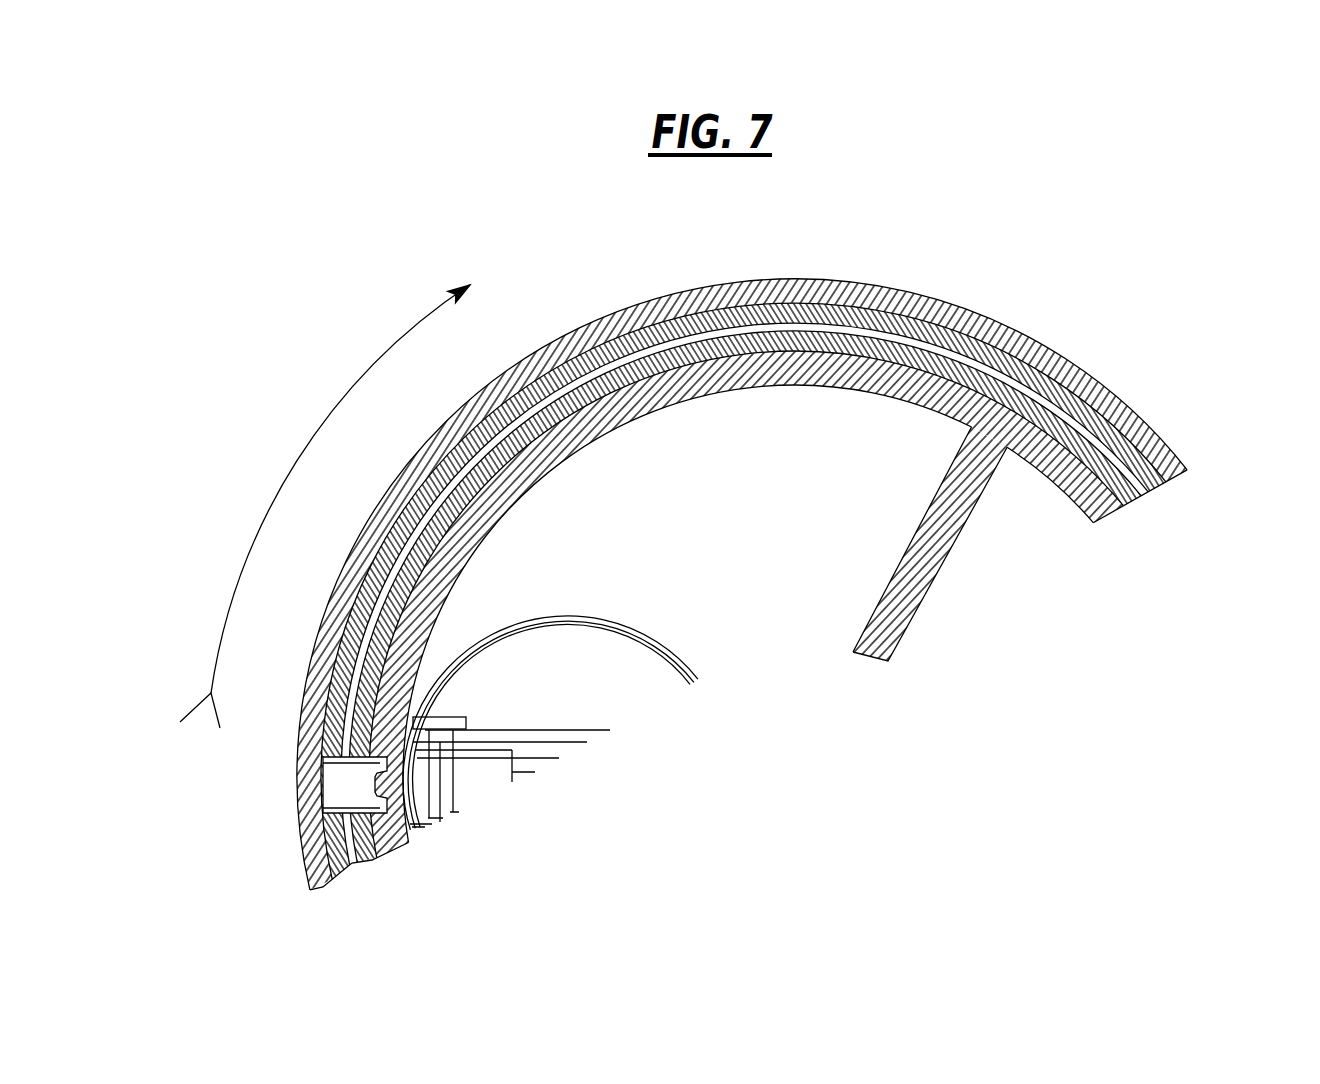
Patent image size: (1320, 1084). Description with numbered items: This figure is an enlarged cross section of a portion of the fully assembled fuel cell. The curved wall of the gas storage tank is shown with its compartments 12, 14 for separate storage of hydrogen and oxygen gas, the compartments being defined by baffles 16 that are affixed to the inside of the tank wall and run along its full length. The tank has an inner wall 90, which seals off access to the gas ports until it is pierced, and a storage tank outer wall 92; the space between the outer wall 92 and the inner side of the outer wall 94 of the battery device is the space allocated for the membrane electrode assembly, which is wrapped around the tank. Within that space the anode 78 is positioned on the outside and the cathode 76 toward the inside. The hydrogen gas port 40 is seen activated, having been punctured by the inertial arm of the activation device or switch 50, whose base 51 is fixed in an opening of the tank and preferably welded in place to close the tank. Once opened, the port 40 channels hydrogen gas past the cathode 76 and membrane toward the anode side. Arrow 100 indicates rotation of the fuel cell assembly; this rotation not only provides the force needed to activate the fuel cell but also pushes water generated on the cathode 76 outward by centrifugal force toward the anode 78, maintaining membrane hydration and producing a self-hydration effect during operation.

The compartment 12 is at (1045, 514).
The compartment 14 is at (749, 569).
The baffle 16 is at (957, 543).
The hydrogen gas port 40 is at (347, 787).
The activation device 50 is at (543, 738).
The base 51 is at (668, 641).
The cathode 76 is at (413, 567).
The anode 78 is at (1047, 358).
The inner wall 90 is at (595, 442).
The storage tank outer wall 92 is at (518, 442).
The outer wall 94 is at (312, 872).
The arrow 100 is at (292, 477).